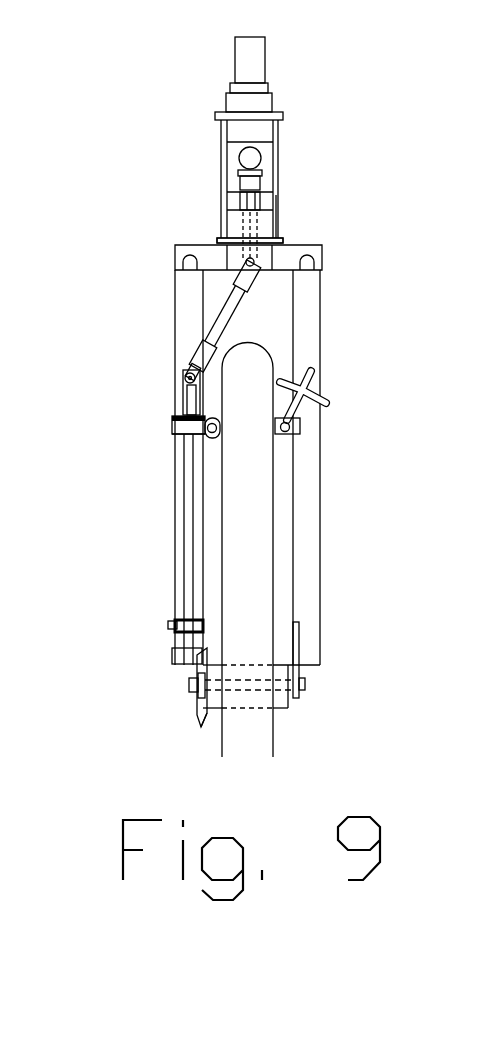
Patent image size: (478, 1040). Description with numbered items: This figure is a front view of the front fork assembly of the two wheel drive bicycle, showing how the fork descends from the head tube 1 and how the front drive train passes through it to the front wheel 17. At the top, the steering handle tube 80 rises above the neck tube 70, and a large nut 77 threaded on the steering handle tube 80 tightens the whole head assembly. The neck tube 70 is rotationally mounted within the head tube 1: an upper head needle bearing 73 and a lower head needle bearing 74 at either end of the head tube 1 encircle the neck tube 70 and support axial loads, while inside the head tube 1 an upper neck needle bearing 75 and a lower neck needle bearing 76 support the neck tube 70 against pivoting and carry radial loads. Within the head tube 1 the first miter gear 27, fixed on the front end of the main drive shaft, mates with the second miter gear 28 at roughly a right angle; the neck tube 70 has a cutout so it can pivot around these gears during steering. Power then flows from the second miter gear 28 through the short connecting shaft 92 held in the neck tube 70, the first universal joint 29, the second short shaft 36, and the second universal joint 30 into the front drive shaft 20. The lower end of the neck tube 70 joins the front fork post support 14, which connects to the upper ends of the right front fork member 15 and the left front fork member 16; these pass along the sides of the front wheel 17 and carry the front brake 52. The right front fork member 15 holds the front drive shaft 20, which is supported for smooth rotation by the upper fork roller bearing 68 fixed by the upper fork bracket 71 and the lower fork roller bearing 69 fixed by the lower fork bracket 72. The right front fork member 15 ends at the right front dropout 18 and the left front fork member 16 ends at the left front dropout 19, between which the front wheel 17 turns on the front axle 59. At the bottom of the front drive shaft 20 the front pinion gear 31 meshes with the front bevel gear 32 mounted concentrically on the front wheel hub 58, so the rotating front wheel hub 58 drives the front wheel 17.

The head tube 1 is at (220, 135).
The front fork post support 14 is at (325, 244).
The right front fork member 15 is at (176, 350).
The left front fork member 16 is at (320, 300).
The front wheel 17 is at (253, 347).
The right front dropout 18 is at (195, 670).
The left front dropout 19 is at (300, 672).
The front drive shaft 20 is at (185, 535).
The first miter gear 27 is at (240, 158).
The second miter gear 28 is at (240, 182).
The first universal joint 29 is at (228, 240).
The second universal joint 30 is at (183, 394).
The front pinion gear 31 is at (175, 650).
The front bevel gear 32 is at (203, 723).
The second short shaft 36 is at (205, 328).
The front brake 52 is at (322, 391).
The front wheel hub 58 is at (288, 706).
The front axle 59 is at (305, 688).
The upper fork roller bearing 68 is at (180, 434).
The lower fork roller bearing 69 is at (173, 622).
The neck tube 70 is at (272, 100).
The upper fork bracket 71 is at (173, 427).
The lower fork bracket 72 is at (173, 631).
The upper head needle bearing 73 is at (283, 116).
The lower head needle bearing 74 is at (285, 243).
The upper neck needle bearing 75 is at (278, 140).
The lower neck needle bearing 76 is at (278, 213).
The large nut 77 is at (222, 85).
The steering handle tube 80 is at (265, 65).
The short connecting shaft 92 is at (245, 208).